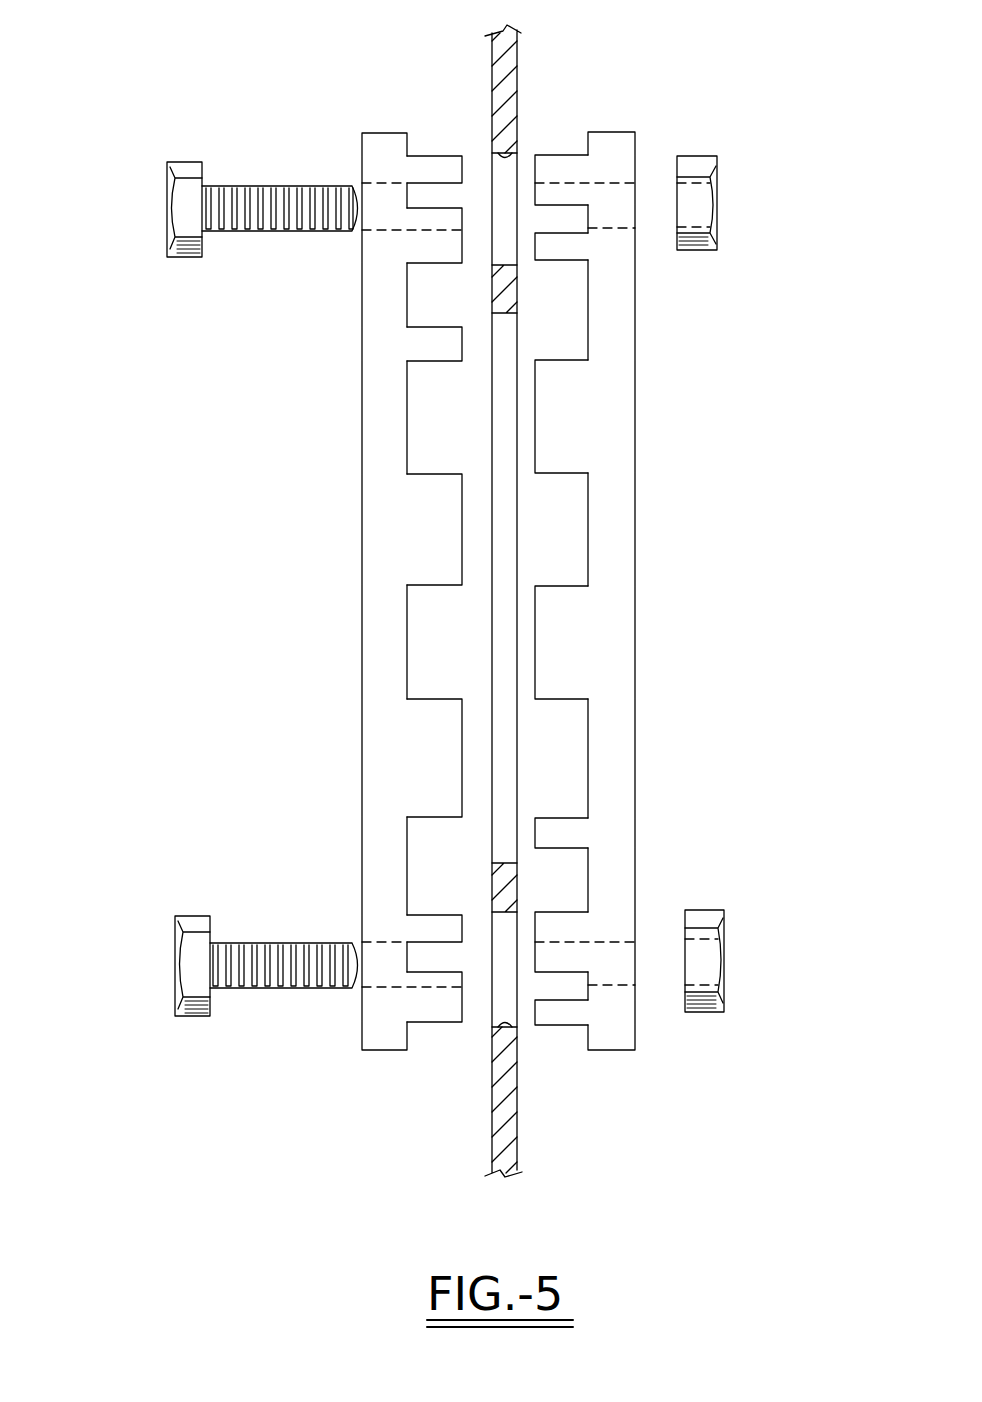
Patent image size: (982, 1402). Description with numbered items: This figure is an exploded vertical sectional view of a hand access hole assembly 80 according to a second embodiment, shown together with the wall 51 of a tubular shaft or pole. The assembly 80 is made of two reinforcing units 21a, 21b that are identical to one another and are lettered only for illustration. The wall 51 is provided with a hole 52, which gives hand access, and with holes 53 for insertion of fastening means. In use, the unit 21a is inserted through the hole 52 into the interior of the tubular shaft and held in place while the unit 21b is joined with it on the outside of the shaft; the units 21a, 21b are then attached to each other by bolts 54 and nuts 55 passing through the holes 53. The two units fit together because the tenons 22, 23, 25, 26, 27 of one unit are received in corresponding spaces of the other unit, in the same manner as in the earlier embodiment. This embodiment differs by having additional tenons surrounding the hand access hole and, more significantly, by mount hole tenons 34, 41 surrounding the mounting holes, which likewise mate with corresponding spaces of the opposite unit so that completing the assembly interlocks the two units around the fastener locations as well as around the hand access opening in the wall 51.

The hand access hole assembly 80 is at (337, 102).
The reinforcing unit 21a is at (640, 568).
The reinforcing unit 21b is at (358, 667).
The tenon 22 is at (559, 650).
The tenon 23 is at (559, 418).
The tenon 25 is at (447, 763).
The tenon 26 is at (452, 538).
The tenon 27 is at (432, 352).
The mount hole tenon 34 is at (578, 1083).
The mount hole tenon 41 is at (433, 918).
The wall 51 is at (490, 66).
The hole 52 is at (493, 327).
The holes 53 is at (517, 157).
The bolts 54 is at (183, 162).
The nuts 55 is at (698, 158).